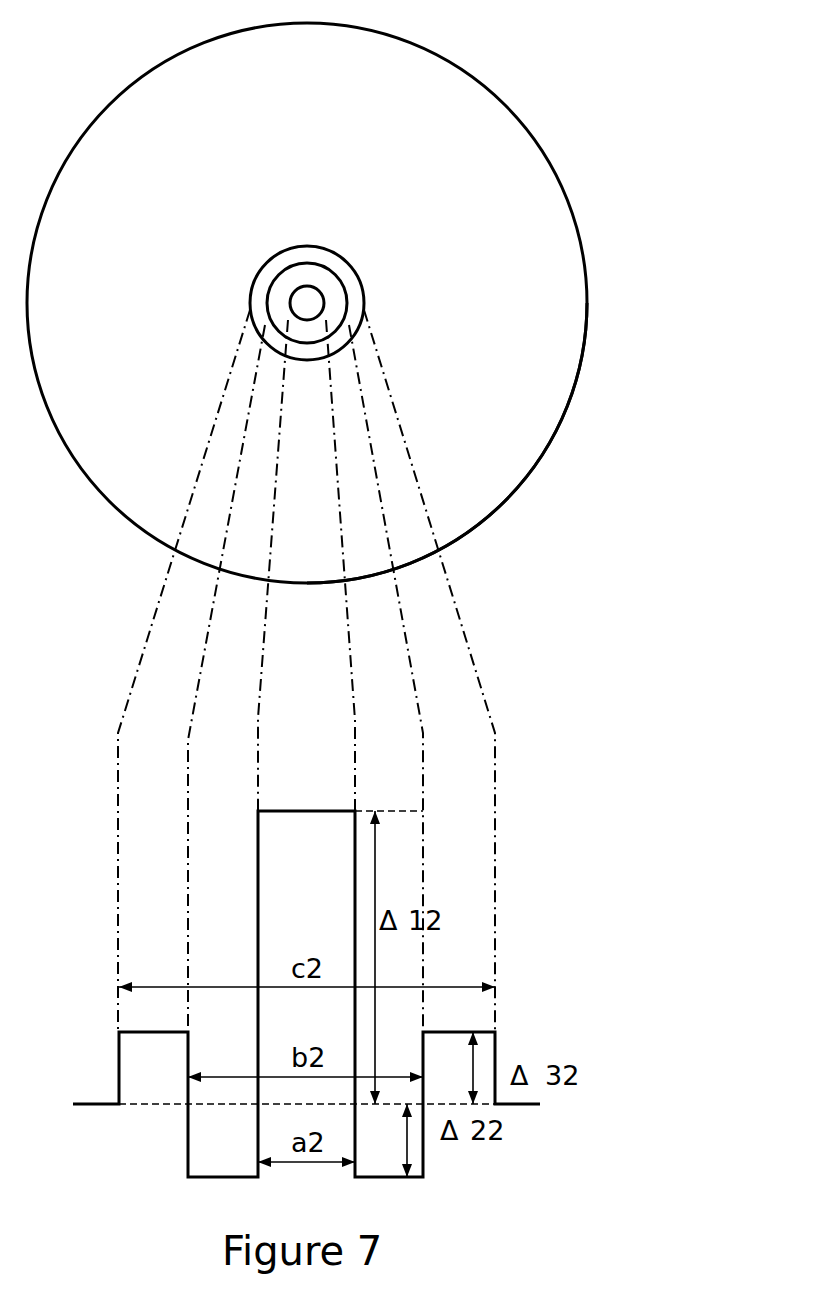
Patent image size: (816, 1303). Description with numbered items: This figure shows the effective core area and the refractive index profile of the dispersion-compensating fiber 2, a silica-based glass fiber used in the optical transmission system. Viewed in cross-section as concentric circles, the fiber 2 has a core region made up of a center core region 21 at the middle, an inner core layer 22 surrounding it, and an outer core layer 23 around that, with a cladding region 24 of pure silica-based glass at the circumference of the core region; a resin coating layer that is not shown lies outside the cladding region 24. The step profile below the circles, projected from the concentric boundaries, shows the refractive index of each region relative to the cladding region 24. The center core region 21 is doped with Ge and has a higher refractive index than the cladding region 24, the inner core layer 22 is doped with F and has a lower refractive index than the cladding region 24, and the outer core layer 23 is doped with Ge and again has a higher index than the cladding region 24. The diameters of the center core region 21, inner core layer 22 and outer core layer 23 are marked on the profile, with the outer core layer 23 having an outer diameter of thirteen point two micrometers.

The dispersion-compensating fiber 2 is at (510, 52).
The center core region 21 is at (307, 300).
The inner core layer 22 is at (357, 312).
The outer core layer 23 is at (315, 330).
The cladding region 24 is at (520, 415).